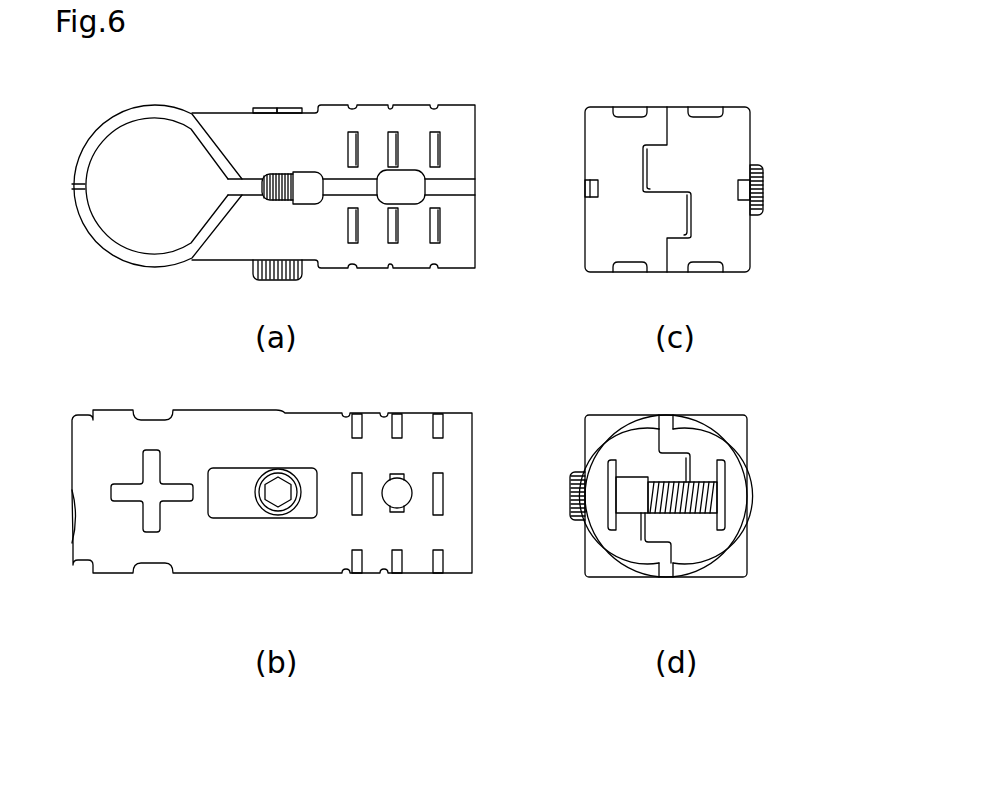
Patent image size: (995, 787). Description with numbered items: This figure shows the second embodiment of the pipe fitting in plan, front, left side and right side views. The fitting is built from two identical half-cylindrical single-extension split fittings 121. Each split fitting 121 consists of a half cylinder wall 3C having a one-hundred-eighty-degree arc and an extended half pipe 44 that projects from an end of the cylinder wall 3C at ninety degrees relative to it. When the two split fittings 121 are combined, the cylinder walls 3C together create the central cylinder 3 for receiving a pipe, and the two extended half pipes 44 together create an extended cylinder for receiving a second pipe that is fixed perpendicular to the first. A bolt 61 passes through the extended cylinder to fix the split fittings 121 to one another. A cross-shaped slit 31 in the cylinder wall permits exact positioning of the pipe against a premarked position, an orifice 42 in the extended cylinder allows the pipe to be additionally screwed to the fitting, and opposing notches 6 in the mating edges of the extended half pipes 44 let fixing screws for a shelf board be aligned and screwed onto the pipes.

The central cylinder 3 is at (740, 558).
The ½ cylinder wall 3C is at (150, 110).
The notch 6 is at (405, 198).
The cross-shaped slit 31 is at (152, 527).
The orifice 42 is at (393, 498).
The extended half pipe 44 is at (415, 120).
The bolt 61 is at (292, 283).
The ½-cylindrical single-extension split fitting 121 is at (400, 406).